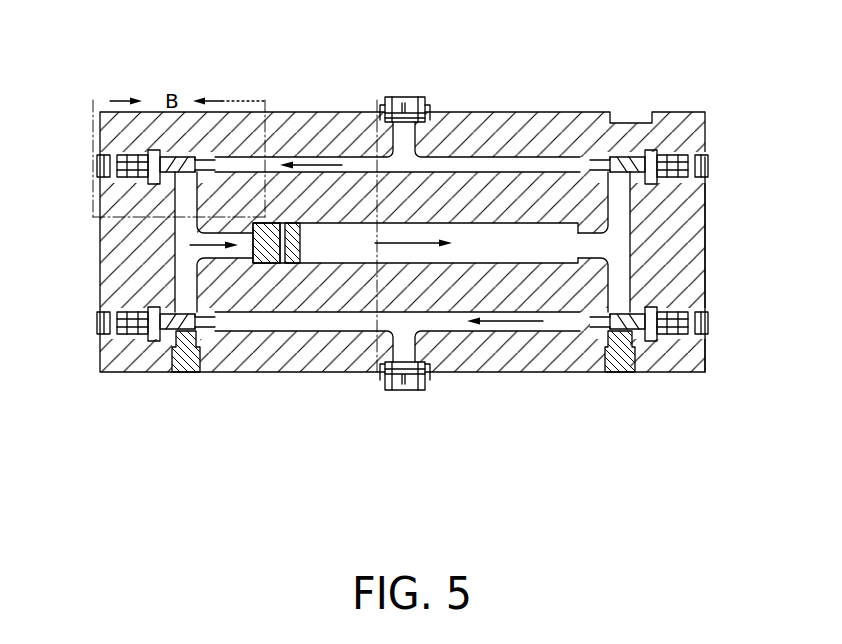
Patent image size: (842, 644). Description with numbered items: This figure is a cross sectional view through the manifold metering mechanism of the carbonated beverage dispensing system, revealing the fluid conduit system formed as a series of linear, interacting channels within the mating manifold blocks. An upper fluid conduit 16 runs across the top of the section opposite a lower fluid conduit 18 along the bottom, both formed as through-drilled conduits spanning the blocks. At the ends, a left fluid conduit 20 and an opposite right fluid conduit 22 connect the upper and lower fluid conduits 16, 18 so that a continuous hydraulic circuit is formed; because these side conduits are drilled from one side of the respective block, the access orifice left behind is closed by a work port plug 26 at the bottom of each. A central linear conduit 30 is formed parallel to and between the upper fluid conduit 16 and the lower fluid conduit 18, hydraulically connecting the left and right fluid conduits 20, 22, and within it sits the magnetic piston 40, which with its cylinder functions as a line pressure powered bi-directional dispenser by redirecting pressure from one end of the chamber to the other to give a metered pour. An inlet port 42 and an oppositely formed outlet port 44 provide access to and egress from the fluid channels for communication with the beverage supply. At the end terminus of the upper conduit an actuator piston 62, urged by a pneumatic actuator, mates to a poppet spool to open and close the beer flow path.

The upper fluid conduit 16 is at (494, 160).
The lower fluid conduit 18 is at (493, 327).
The left fluid conduit 20 is at (178, 255).
The right fluid conduit 22 is at (622, 270).
The work port plug 26 is at (187, 372).
The central linear conduit 30 is at (543, 257).
The magnetic piston 40 is at (285, 257).
The inlet port 42 is at (393, 391).
The outlet port 44 is at (408, 97).
The actuator piston 62 is at (623, 170).